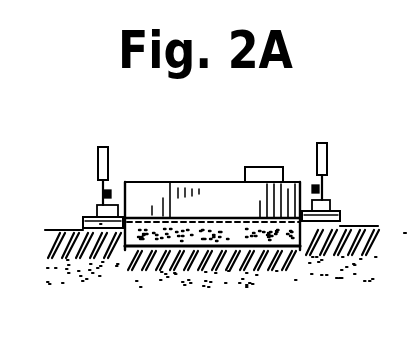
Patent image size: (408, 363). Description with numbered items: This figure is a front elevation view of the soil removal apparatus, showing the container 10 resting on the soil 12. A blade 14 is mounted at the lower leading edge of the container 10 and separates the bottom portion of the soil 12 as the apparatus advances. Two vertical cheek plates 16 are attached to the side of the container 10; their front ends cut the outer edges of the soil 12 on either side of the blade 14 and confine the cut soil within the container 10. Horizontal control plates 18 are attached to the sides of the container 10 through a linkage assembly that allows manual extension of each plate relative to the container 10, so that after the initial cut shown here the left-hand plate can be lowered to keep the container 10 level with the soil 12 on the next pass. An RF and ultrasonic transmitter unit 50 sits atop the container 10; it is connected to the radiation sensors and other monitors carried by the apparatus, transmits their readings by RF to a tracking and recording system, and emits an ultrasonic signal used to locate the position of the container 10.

The container 10 is at (218, 183).
The soil 12 is at (55, 228).
The blade 14 is at (241, 247).
The vertical cheek plates 16 is at (126, 205).
The horizontal control plates 18 is at (344, 216).
The RF and ultrasonic transmitter unit 50 is at (272, 165).